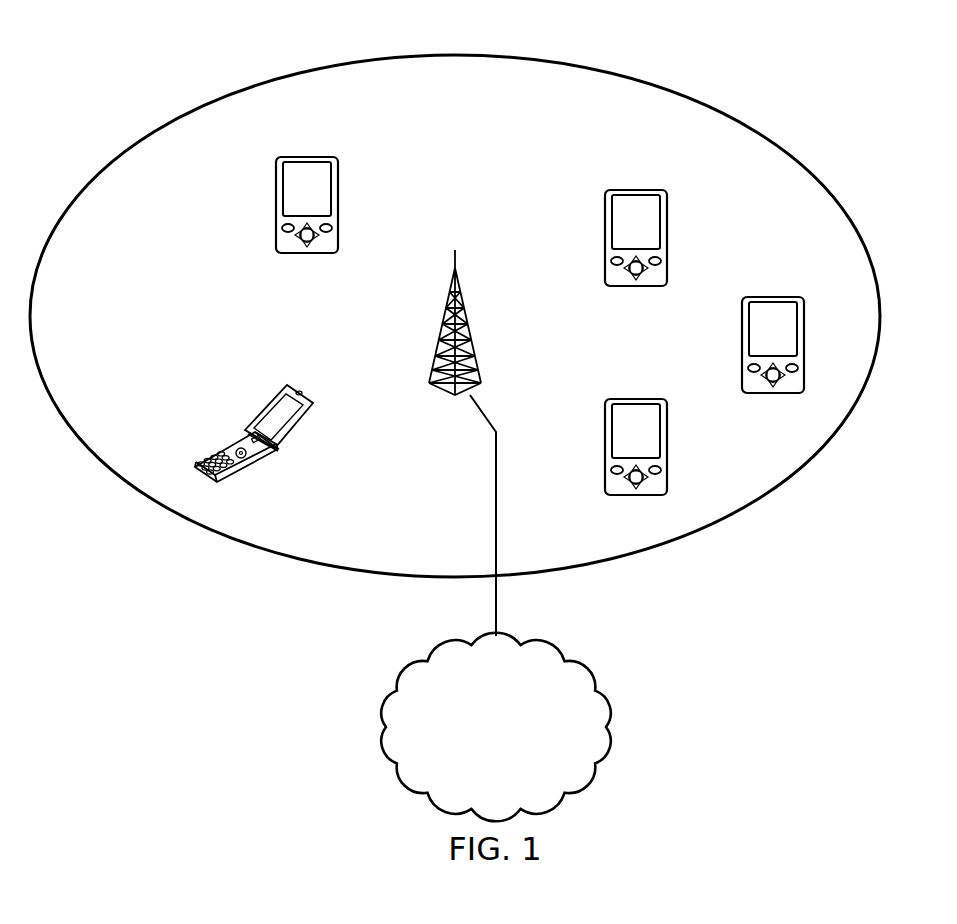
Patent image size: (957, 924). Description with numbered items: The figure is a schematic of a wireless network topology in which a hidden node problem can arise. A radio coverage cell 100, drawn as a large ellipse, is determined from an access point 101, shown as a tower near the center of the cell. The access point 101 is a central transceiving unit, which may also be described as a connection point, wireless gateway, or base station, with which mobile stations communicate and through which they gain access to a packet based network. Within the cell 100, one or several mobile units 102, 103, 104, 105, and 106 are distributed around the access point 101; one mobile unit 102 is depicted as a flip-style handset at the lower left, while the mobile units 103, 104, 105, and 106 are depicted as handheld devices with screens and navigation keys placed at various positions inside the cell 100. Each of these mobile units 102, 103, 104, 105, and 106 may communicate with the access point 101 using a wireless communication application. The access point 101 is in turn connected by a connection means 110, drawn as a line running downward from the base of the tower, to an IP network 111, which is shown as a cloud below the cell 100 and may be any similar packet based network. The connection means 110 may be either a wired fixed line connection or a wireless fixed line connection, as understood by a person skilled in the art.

The radio coverage cell 100 is at (602, 65).
The access point 101 is at (470, 330).
The mobile unit 102 is at (226, 444).
The mobile unit 103 is at (307, 157).
The mobile unit 104 is at (633, 190).
The mobile unit 105 is at (668, 450).
The mobile unit 106 is at (770, 297).
The connection means 110 is at (496, 493).
The IP network 111 is at (495, 727).